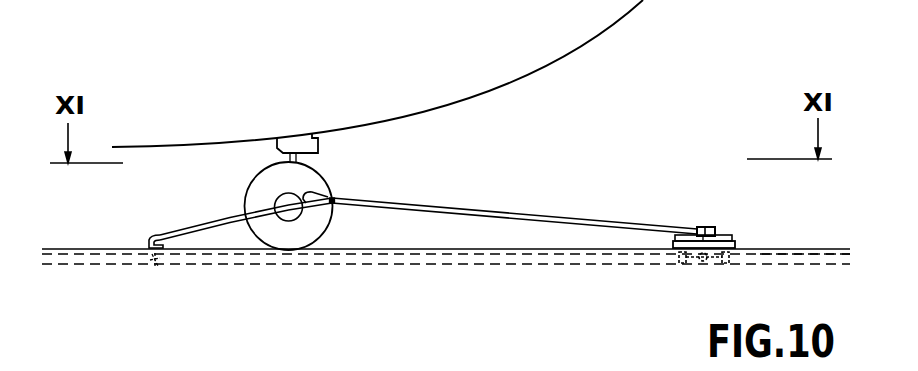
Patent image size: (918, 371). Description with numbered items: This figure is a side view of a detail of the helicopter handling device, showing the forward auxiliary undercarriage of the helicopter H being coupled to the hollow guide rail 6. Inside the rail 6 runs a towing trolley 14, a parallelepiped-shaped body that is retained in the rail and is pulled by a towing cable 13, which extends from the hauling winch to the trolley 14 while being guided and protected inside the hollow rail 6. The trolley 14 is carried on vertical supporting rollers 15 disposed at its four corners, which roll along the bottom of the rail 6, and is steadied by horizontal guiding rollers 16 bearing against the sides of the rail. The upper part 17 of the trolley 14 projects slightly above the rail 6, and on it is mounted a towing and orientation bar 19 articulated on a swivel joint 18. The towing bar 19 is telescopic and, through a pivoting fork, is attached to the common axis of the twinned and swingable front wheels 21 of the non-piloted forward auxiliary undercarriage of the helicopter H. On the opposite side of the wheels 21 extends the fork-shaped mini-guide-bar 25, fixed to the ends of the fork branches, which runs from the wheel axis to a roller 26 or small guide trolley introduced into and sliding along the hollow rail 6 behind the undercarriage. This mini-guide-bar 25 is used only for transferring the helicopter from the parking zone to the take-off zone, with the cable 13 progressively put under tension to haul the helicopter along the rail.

The helicopter H is at (545, 65).
The guide rail 6 is at (92, 255).
The towing cable 13 is at (800, 252).
The towing trolley 14 is at (713, 227).
The vertical supporting rollers 15 is at (682, 264).
The horizontal guiding rollers 16 is at (702, 262).
The upper part of the trolley 17 is at (733, 236).
The swivel joint 18 is at (708, 228).
The towing and orientation bar 19 is at (491, 211).
The front wheels 21 is at (295, 242).
The mini-guide-bar 25 is at (207, 224).
The roller 26 is at (158, 263).